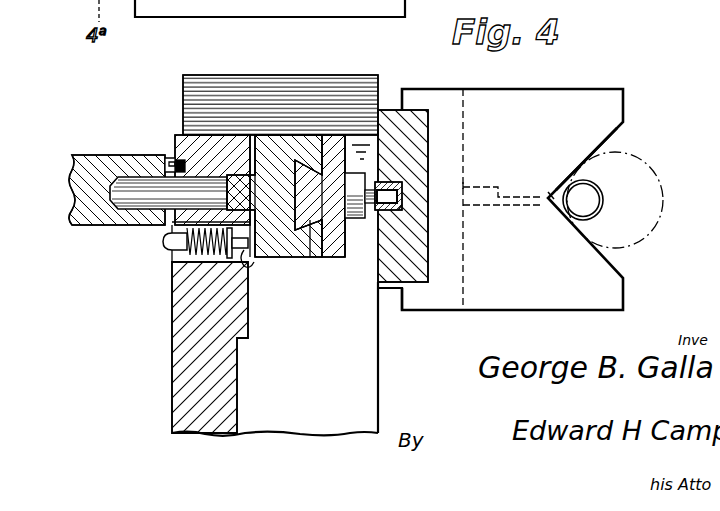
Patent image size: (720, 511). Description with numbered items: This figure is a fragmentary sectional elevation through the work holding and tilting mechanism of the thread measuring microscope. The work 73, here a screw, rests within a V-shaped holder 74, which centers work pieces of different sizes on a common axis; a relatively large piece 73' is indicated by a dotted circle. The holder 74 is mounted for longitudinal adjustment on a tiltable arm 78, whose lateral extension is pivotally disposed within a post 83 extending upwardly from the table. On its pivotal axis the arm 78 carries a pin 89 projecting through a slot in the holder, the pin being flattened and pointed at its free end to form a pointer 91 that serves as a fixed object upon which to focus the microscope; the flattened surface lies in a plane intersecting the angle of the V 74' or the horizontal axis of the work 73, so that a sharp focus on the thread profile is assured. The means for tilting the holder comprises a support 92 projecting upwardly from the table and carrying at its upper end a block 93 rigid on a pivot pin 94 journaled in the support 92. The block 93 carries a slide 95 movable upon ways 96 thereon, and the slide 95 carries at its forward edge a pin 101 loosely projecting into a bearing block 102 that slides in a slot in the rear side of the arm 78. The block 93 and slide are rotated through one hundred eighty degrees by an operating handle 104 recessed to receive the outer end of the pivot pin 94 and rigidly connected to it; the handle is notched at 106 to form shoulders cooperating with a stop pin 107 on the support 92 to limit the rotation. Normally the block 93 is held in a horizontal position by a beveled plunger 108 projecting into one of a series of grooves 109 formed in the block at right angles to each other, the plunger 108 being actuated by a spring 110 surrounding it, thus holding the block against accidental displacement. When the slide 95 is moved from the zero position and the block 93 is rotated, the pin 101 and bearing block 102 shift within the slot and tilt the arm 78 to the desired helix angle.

The work 73 is at (603, 191).
The relatively large piece 73' is at (639, 200).
The V-shaped holder 74 is at (512, 185).
The angle of the V 74' is at (619, 154).
The tiltable arm 78 is at (392, 108).
The post 83 is at (395, 368).
The pin 89 is at (481, 187).
The pointer 91 is at (541, 195).
The support 92 is at (172, 360).
The block 93 is at (305, 258).
The pivot pin 94 is at (132, 198).
The slide 95 is at (339, 258).
The ways 96 is at (309, 258).
The pin 101 is at (385, 193).
The bearing block 102 is at (398, 215).
The operating handle 104 is at (78, 158).
The notch 106 is at (139, 158).
The stop pin 107 is at (167, 157).
The beveled plunger 108 is at (252, 272).
The grooves 109 is at (262, 180).
The spring 110 is at (173, 272).